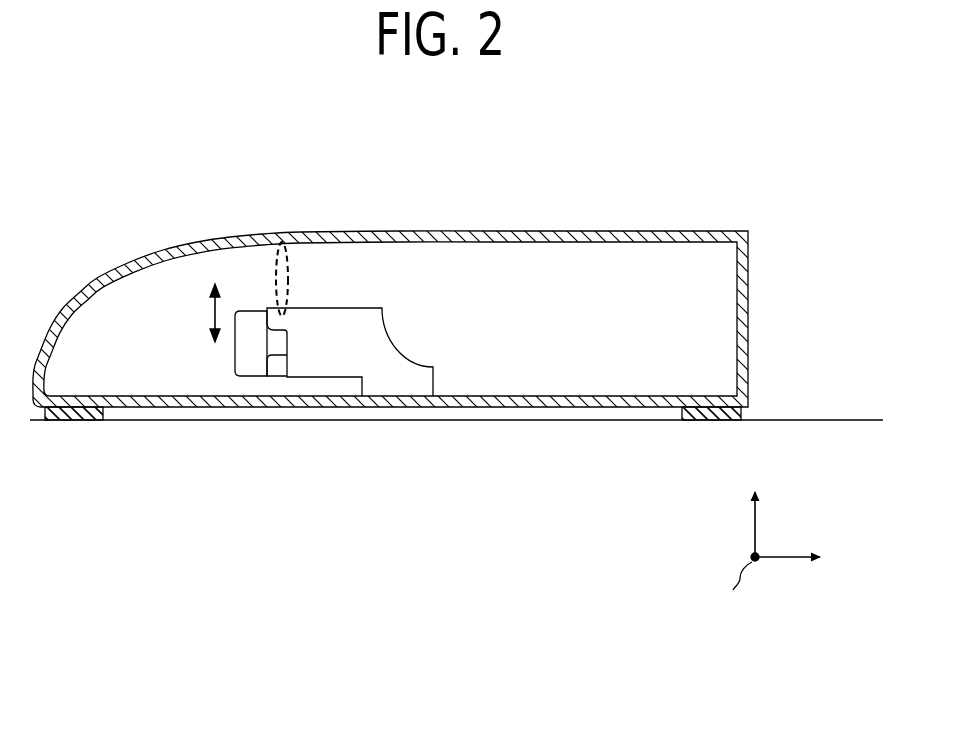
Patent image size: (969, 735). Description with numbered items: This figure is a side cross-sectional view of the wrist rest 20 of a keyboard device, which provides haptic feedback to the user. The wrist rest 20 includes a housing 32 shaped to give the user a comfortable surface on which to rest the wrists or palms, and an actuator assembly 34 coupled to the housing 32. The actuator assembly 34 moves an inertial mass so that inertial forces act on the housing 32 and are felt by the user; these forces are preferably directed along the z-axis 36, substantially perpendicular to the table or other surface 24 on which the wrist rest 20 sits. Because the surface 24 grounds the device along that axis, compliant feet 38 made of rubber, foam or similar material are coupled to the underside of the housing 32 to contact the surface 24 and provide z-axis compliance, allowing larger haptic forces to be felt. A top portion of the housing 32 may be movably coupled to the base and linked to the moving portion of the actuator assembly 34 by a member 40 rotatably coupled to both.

The wrist rest 20 is at (278, 162).
The surface 24 is at (803, 413).
The housing 32 is at (453, 231).
The actuator assembly 34 is at (424, 318).
The z-axis 36 is at (755, 518).
The compliant feet 38 is at (83, 418).
The member 40 is at (289, 271).